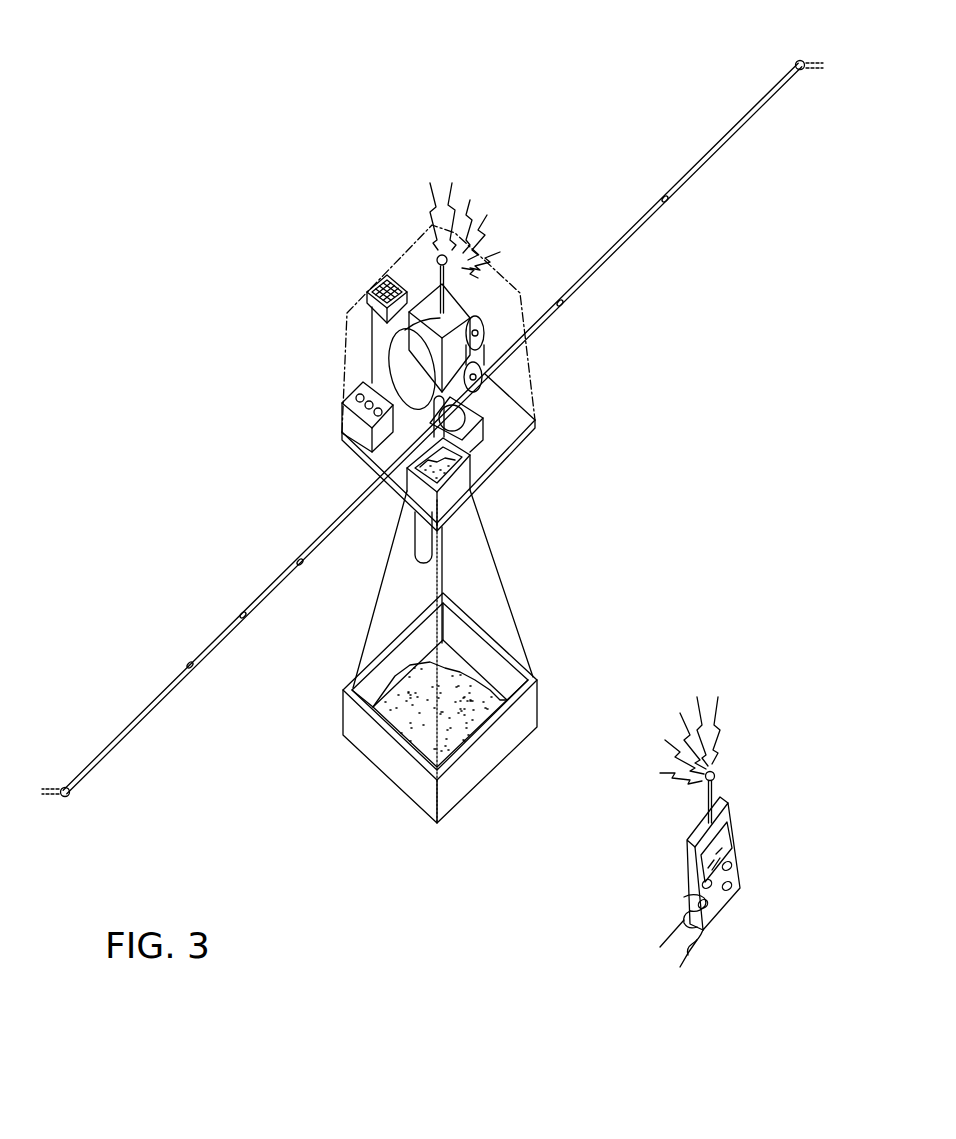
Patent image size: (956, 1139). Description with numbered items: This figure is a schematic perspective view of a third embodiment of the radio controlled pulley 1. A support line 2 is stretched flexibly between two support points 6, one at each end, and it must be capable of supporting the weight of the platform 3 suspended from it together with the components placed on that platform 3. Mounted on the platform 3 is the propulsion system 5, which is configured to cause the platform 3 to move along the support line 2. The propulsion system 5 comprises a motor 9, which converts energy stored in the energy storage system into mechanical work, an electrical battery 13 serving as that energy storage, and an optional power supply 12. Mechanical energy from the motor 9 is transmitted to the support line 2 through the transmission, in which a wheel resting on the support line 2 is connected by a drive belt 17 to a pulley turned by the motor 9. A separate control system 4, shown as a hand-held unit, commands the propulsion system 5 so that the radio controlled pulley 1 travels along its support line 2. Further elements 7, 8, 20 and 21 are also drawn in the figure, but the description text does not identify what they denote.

The radio controlled pulley 1 is at (200, 148).
The support line 2 is at (735, 128).
The platform 3 is at (510, 428).
The control system 4 is at (690, 888).
The propulsion system 5 is at (458, 308).
The support points 6 is at (803, 60).
The collecting container 7 is at (532, 707).
The material hopper 8 is at (418, 490).
The motor 9 is at (417, 352).
The power supply 12 is at (370, 306).
The electrical battery 13 is at (344, 422).
The drive belt 17 is at (488, 360).
The dosing roller 20 is at (465, 465).
The cable marker 21 is at (668, 205).